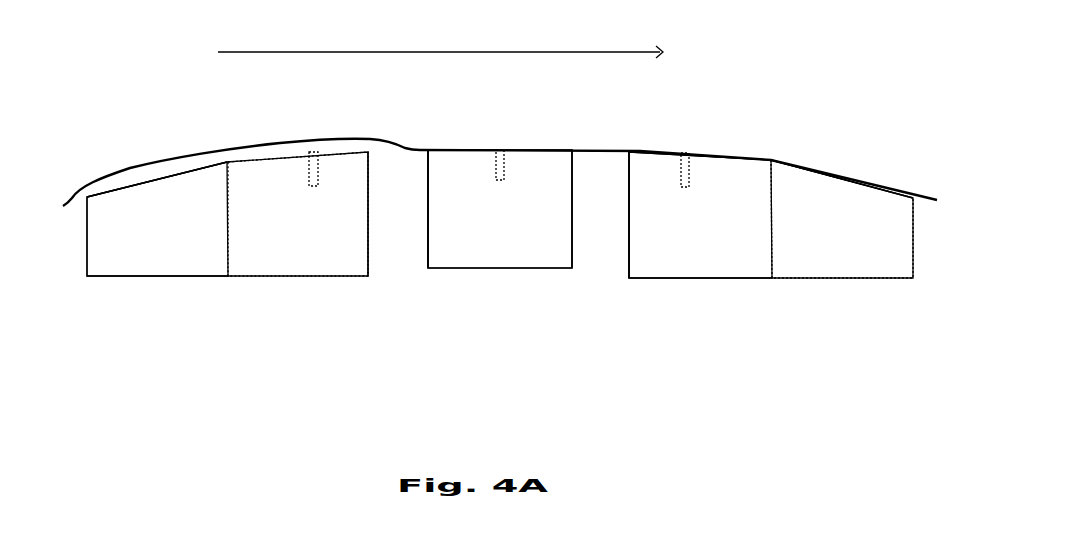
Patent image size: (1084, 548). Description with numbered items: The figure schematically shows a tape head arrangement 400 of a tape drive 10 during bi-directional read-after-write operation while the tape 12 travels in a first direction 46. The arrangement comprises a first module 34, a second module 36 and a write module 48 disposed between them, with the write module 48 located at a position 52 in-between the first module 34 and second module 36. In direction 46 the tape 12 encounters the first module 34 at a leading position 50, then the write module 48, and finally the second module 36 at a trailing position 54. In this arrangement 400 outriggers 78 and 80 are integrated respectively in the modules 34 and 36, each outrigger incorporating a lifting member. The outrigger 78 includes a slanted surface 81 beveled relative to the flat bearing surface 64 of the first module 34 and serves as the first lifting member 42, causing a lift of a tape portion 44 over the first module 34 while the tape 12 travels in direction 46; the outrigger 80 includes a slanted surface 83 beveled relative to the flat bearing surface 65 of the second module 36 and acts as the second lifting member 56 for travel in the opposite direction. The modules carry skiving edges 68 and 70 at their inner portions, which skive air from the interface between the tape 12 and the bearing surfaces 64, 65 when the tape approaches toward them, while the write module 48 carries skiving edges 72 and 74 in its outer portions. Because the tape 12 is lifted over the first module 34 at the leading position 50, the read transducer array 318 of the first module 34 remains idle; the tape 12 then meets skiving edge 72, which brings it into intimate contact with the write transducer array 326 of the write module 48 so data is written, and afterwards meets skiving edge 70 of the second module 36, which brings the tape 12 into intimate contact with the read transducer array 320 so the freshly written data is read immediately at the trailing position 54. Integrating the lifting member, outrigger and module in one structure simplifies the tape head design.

The tape drive 10 is at (803, 95).
The tape 12 is at (147, 160).
The first module 34 is at (322, 270).
The second module 36 is at (693, 271).
The first lifting member 42 is at (190, 190).
The tape portion 44 is at (307, 128).
The first direction 46 is at (285, 50).
The write module 48 is at (452, 262).
The leading position 50 is at (309, 345).
The position in-between first module and second module 52 is at (503, 337).
The trailing position 54 is at (702, 339).
The second lifting member 56 is at (818, 198).
The tape bearing surface 64 is at (298, 160).
The tape bearing surface 65 is at (749, 160).
The skiving edge 68 is at (372, 165).
The skiving edge 70 is at (631, 170).
The skiving edge 72 is at (430, 170).
The skiving edge 74 is at (574, 163).
The outrigger 78 is at (106, 268).
The outrigger 80 is at (892, 271).
The slanted surface 81 is at (162, 180).
The slanted surface 83 is at (841, 185).
The read transducer array 318 is at (320, 172).
The read transducer array 320 is at (686, 190).
The write transducer array 326 is at (505, 162).
The tape head arrangement 400 is at (172, 342).